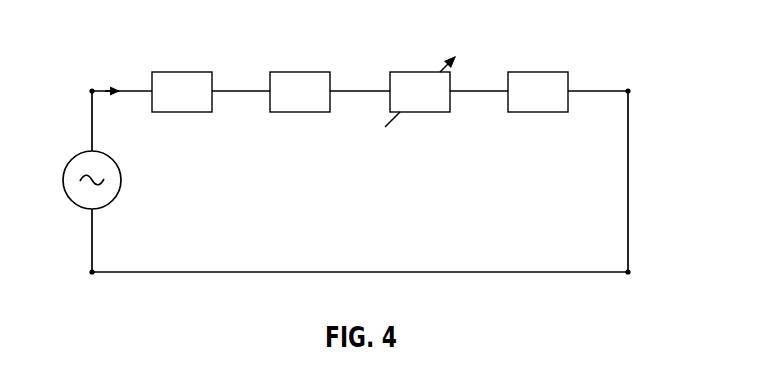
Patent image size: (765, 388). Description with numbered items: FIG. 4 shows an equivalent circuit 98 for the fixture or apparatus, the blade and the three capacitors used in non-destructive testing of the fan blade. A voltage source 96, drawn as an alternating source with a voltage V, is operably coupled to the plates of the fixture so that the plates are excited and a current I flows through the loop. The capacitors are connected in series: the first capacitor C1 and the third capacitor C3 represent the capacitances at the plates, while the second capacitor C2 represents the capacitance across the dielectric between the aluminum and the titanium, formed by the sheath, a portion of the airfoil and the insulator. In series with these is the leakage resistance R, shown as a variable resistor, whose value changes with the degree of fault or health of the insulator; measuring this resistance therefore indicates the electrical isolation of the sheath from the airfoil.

The voltage source 96 is at (90, 195).
The equivalent circuit 98 is at (359, 143).
The first capacitor C1 is at (182, 93).
The second capacitor C2 is at (300, 93).
The leakage resistance R is at (420, 91).
The third capacitor C3 is at (538, 93).
The voltage V is at (141, 171).
The current I is at (112, 109).